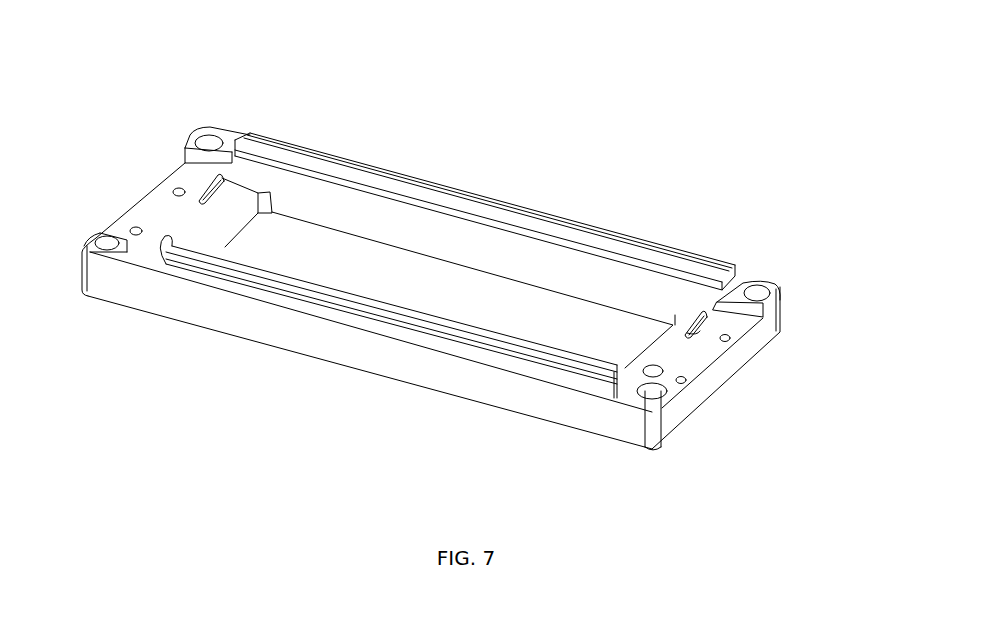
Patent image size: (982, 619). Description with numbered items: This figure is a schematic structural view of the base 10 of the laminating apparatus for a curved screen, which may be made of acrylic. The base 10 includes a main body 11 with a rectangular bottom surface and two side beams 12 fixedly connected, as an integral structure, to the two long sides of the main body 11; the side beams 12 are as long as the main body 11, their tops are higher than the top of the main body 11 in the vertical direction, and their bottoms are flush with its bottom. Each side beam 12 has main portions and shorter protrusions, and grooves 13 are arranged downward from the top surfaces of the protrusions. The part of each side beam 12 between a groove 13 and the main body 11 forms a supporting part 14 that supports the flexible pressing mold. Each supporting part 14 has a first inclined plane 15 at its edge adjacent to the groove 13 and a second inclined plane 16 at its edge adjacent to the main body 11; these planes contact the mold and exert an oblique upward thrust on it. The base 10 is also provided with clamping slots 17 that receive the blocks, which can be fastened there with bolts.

The base 10 is at (435, 257).
The main body 11 is at (426, 288).
The side beams 12 is at (370, 350).
The grooves 13 is at (648, 237).
The supporting parts 14 is at (444, 315).
The first inclined plane 15 is at (390, 362).
The second inclined plane 16 is at (661, 417).
The clamping slots 17 is at (708, 304).